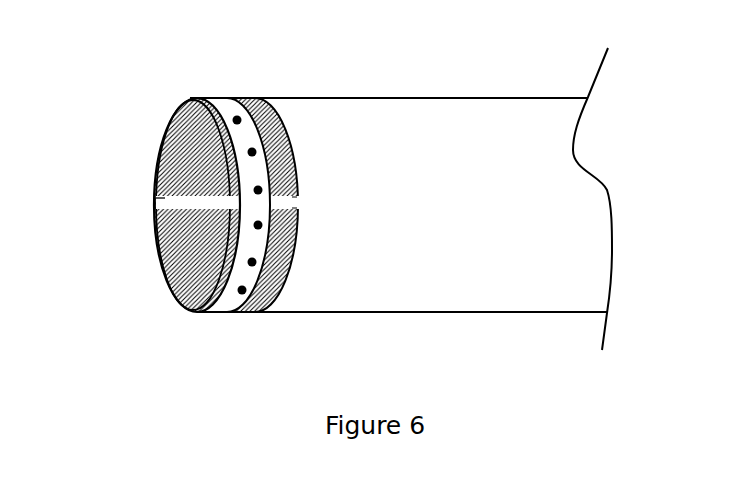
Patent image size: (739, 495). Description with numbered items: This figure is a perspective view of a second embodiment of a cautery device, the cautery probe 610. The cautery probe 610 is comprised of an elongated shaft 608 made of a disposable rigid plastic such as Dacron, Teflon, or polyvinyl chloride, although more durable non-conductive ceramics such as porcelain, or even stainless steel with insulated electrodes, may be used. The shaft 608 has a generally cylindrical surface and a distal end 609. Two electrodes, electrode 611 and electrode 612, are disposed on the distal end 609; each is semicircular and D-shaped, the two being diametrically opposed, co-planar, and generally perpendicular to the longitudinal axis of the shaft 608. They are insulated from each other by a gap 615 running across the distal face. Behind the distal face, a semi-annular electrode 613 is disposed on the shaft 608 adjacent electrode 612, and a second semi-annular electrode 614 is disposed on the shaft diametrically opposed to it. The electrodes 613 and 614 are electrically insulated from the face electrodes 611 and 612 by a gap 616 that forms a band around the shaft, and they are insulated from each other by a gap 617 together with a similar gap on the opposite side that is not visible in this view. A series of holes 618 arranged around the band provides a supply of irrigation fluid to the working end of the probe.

The elongated shaft 608 is at (473, 115).
The distal end 609 is at (163, 255).
The cautery probe 610 is at (473, 313).
The electrode 611 is at (177, 300).
The electrode 612 is at (160, 135).
The electrode 613 is at (257, 100).
The electrode 614 is at (275, 307).
The gap 615 is at (163, 198).
The gap 616 is at (228, 303).
The gap 617 is at (293, 203).
The holes 618 is at (232, 103).